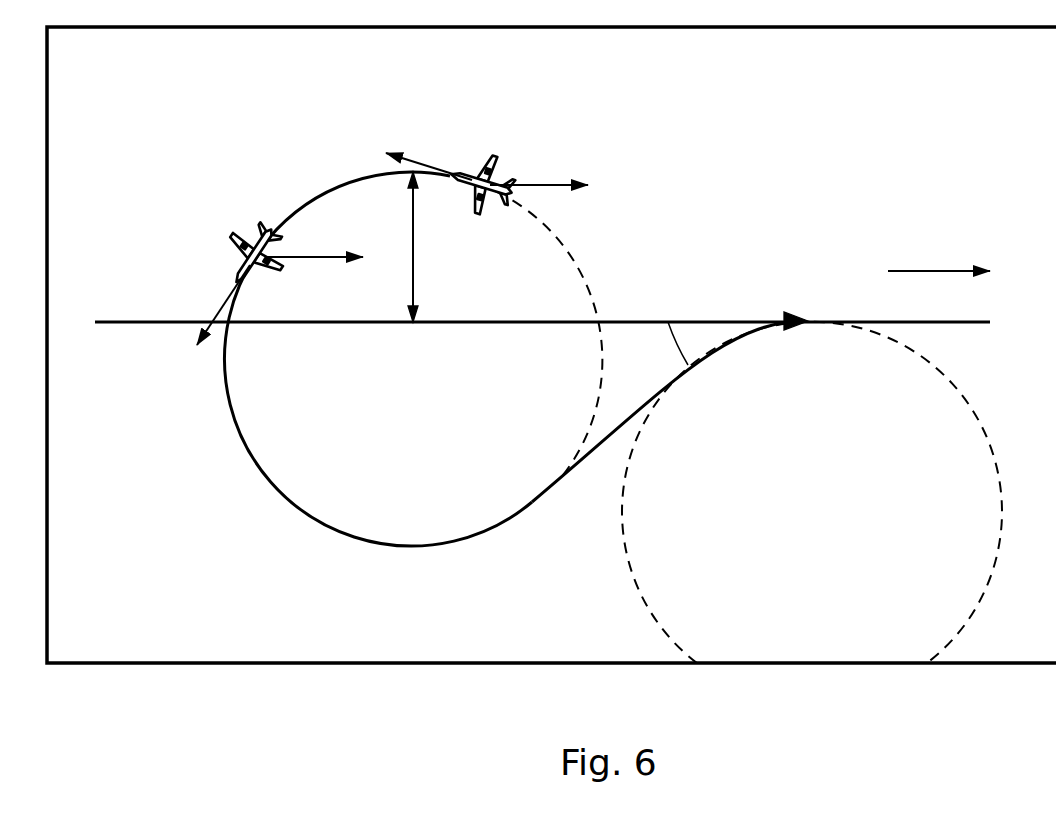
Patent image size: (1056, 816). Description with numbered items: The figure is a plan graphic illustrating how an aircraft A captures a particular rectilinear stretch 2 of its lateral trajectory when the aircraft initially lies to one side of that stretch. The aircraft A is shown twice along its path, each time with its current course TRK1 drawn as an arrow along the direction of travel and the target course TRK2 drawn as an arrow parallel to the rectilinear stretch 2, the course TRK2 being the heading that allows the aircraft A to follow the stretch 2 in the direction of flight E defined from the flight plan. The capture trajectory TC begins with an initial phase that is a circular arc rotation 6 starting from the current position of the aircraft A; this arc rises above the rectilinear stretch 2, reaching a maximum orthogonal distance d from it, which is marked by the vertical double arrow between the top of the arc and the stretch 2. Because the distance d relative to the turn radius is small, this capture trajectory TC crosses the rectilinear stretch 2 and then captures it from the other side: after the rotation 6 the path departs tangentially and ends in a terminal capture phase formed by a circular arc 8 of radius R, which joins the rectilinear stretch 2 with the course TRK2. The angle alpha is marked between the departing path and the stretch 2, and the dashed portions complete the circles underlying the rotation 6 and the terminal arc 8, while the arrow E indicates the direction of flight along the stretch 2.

The rectilinear stretch 2 is at (632, 321).
The circular arc rotation 6 is at (207, 393).
The circular arc 8 is at (772, 338).
The aircraft A is at (492, 170).
The capture trajectory TC is at (253, 478).
The current course TRK1 is at (425, 160).
The course TRK2 is at (552, 188).
The distance d is at (415, 248).
The direction of flight E is at (928, 270).
The angle alpha is at (669, 344).